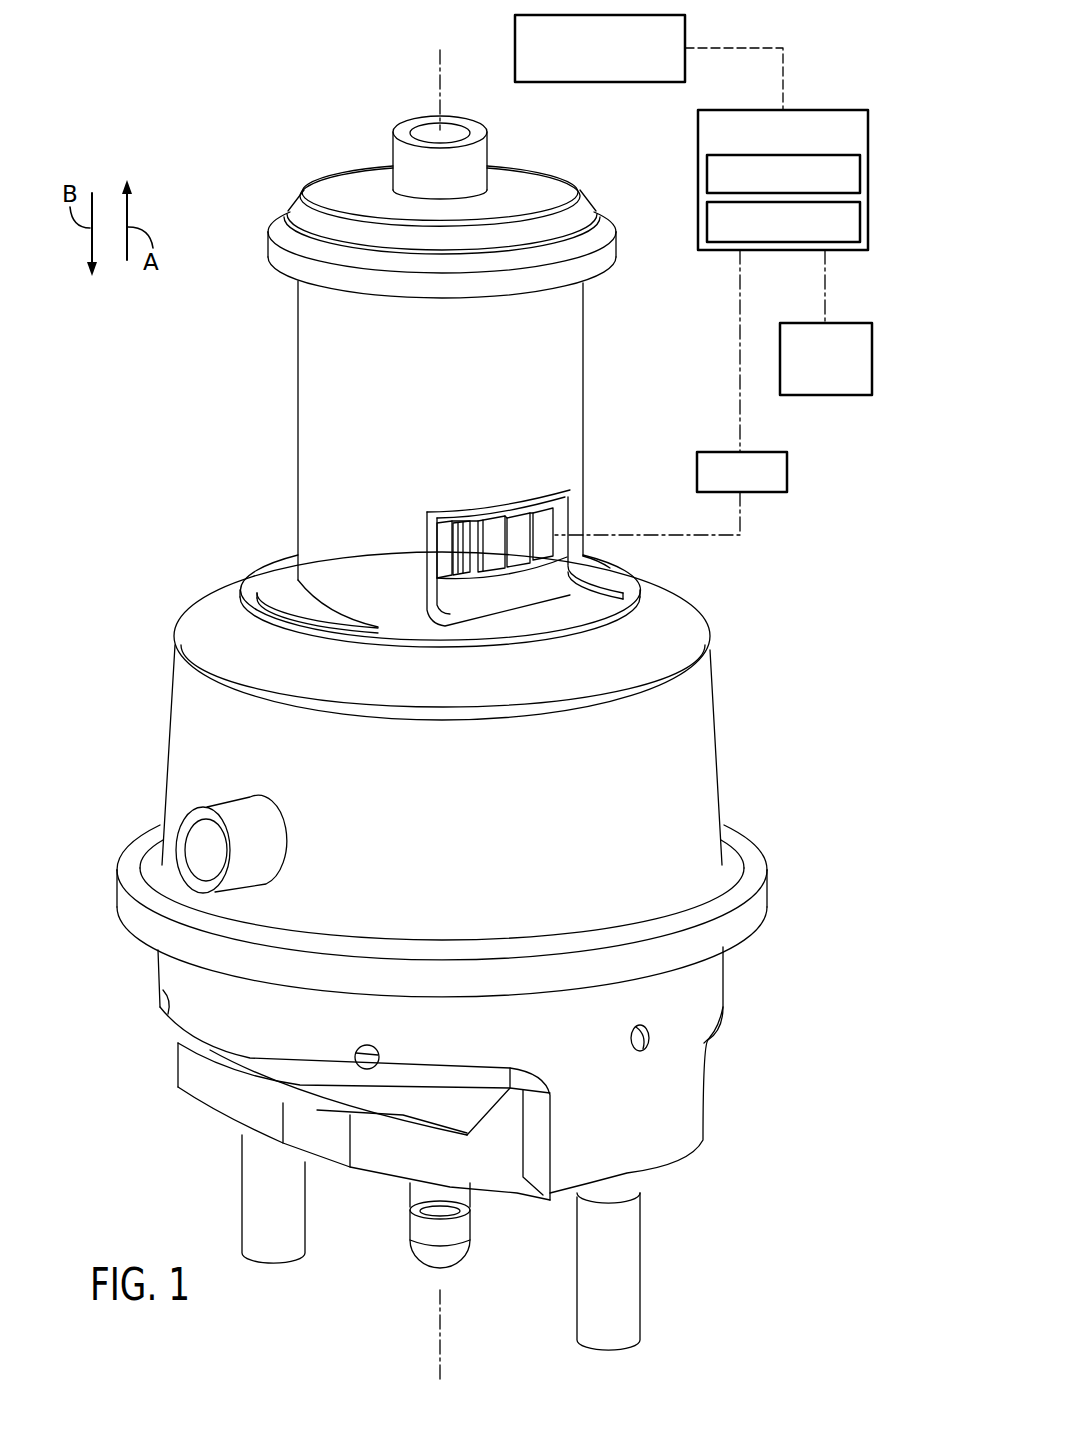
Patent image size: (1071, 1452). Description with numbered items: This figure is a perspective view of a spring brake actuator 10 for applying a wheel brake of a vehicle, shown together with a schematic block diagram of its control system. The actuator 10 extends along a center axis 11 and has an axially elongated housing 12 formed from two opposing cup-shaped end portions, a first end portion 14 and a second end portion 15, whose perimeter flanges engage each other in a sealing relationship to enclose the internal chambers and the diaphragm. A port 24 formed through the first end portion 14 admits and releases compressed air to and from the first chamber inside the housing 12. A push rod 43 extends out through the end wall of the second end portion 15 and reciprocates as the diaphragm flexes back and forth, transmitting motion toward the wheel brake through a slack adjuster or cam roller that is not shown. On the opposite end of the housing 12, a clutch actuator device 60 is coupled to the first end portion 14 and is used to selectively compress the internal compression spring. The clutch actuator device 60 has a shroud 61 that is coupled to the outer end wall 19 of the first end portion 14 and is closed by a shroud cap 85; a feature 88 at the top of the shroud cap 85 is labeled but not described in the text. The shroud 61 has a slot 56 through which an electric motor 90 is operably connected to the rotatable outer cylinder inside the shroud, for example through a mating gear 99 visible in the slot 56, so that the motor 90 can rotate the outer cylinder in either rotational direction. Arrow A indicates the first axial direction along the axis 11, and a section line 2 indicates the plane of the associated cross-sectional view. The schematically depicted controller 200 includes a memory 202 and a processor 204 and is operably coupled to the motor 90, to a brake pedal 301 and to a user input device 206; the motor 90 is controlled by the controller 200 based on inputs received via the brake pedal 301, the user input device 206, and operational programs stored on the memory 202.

The section line 2 is at (715, 280).
The spring brake actuator 10 is at (118, 693).
The center axis 11 is at (440, 90).
The housing 12 is at (700, 775).
The first end portion 14 is at (700, 692).
The second end portion 15 is at (687, 1112).
The outer end wall 19 is at (677, 610).
The port 24 is at (248, 818).
The push rod 43 is at (412, 1193).
The slot 56 is at (545, 502).
The clutch actuator device 60 is at (252, 295).
The shroud 61 is at (573, 382).
The shroud cap 85 is at (563, 193).
The boss 88 is at (475, 127).
The electric motor 90 is at (787, 470).
The gear 99 is at (577, 522).
The controller 200 is at (748, 251).
The memory 202 is at (707, 173).
The processor 204 is at (707, 220).
The user input device 206 is at (685, 32).
The brake pedal 301 is at (848, 395).